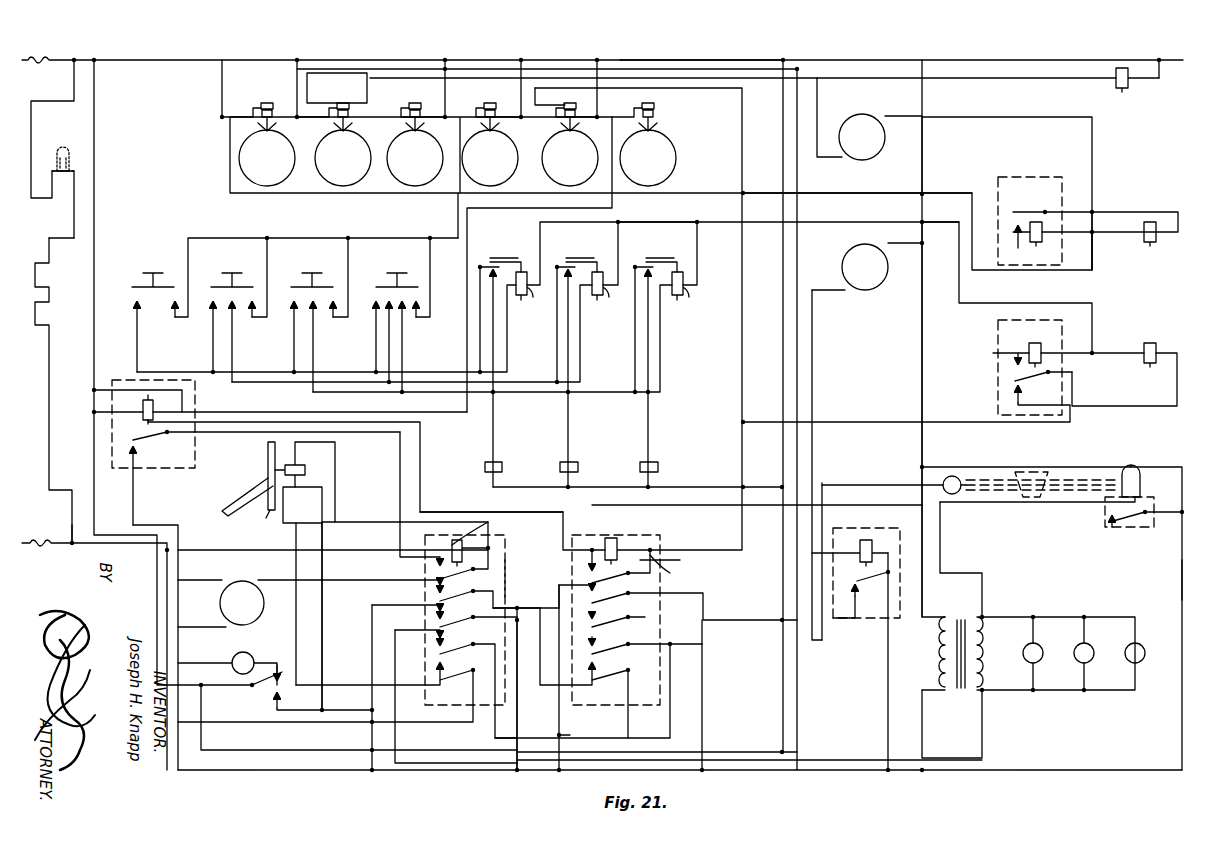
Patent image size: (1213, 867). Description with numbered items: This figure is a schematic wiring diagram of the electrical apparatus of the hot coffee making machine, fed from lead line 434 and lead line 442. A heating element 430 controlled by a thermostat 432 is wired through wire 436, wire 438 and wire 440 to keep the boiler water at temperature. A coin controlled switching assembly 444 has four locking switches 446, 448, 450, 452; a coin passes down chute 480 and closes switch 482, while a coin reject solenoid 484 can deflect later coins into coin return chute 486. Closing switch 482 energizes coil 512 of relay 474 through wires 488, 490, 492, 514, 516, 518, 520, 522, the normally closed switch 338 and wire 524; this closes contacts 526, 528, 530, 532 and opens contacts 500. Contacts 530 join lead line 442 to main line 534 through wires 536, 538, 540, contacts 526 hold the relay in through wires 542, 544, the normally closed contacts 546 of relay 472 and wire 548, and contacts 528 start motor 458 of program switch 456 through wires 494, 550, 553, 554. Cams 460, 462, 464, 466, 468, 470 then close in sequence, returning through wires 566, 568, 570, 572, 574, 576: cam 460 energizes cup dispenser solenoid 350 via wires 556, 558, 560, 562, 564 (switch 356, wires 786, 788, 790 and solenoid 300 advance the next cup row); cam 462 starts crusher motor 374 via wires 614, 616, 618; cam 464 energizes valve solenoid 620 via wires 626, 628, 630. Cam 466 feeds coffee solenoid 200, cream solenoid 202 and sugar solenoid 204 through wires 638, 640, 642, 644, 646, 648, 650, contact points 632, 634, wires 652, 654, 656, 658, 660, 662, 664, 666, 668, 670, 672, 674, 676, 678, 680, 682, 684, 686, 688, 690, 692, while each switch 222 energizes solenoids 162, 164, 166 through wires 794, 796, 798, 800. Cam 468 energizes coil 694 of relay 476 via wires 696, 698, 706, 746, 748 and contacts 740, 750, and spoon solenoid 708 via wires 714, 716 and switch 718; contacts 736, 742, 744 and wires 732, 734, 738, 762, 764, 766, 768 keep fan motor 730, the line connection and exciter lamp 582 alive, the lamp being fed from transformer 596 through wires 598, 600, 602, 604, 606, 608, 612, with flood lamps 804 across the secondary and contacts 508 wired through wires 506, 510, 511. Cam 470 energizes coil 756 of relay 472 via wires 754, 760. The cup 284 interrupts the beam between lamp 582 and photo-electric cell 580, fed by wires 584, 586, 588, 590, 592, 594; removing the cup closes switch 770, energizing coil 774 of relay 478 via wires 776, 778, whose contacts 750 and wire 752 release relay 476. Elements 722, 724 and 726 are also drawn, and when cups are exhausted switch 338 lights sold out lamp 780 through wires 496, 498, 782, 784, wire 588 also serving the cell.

The lead line 434 is at (120, 62).
The wire 566 is at (224, 63).
The wire 568 is at (310, 63).
The wire 570 is at (384, 63).
The wire 572 is at (458, 63).
The wire 574 is at (532, 63).
The wire 576 is at (640, 63).
The wire 628 is at (997, 72).
The solenoid 620 is at (1116, 79).
The wire 626 is at (1160, 82).
The wire 616 is at (819, 95).
The program switch 456 is at (661, 264).
The wire 618 is at (293, 86).
The wire 630 is at (368, 92).
The wire 660 is at (448, 94).
The wire 706 is at (524, 94).
The wire 760 is at (597, 95).
The cam 460 is at (267, 144).
The cam 462 is at (343, 144).
The cam 464 is at (415, 144).
The cam 466 is at (490, 144).
The cam 468 is at (570, 144).
The cam 470 is at (648, 144).
The wire 436 is at (32, 114).
The thermostat 432 is at (76, 152).
The wire 438 is at (74, 234).
The heating element 430 is at (42, 270).
The wire 488 is at (96, 165).
The wire 440 is at (50, 417).
The lead line 442 is at (64, 542).
The wire 490 is at (92, 394).
The wire 754 is at (90, 412).
The coil 756 is at (142, 404).
The relay 472 is at (153, 424).
The wire 492 is at (92, 446).
The normally closed contacts 546 is at (146, 438).
The wire 548 is at (130, 498).
The switch 446 is at (146, 284).
The switch 448 is at (226, 284).
The switch 450 is at (306, 284).
The switch 452 is at (390, 284).
The wire 652 is at (200, 238).
The wire 654 is at (280, 238).
The wire 656 is at (360, 238).
The wire 658 is at (454, 243).
The wire 662 is at (265, 258).
The wire 664 is at (345, 258).
The wire 666 is at (428, 258).
The contact point 632 is at (136, 306).
The contact point 634 is at (173, 302).
The wire 668 is at (213, 336).
The coin controlled switching assembly 444 is at (252, 342).
The wire 670 is at (294, 335).
The wire 690 is at (316, 350).
The wire 672 is at (376, 336).
The wire 682 is at (391, 348).
The wire 692 is at (404, 332).
The wire 650 is at (150, 378).
The wire 648 is at (240, 380).
The wire 646 is at (322, 380).
The wire 644 is at (420, 380).
The wire 680 is at (250, 385).
The wire 678 is at (512, 388).
The wire 688 is at (590, 395).
The coffee solenoid 200 is at (532, 297).
The cream dispensing solenoid 202 is at (608, 297).
The sugar feeding solenoid 204 is at (688, 297).
The switch 222 is at (514, 258).
The wire 642 is at (509, 343).
The wire 676 is at (584, 343).
The wire 686 is at (662, 343).
The wire 800 is at (495, 406).
The solenoid 164 is at (570, 460).
The solenoid 166 is at (650, 460).
The solenoid 162 is at (485, 468).
The wire 640 is at (560, 225).
The wire 674 is at (620, 240).
The wire 684 is at (699, 240).
The wire 638 is at (636, 214).
The wire 798 is at (512, 495).
The wire 796 is at (587, 495).
The wire 794 is at (729, 482).
The wire 696 is at (470, 518).
The wire 748 is at (683, 510).
The chute 480 is at (266, 455).
The coin return chute 486 is at (246, 495).
The coin reject solenoid 484 is at (298, 452).
The wire 506 is at (324, 496).
The wire 518 is at (382, 522).
The wire 544 is at (398, 453).
The switch 482 is at (275, 528).
The wire 514 is at (190, 548).
The wire 494 is at (180, 572).
The motor 458 is at (330, 602).
The wire 550 is at (212, 628).
The wire 538 is at (375, 606).
The wire 520 is at (325, 650).
The wire 496 is at (180, 660).
The wire 782 is at (214, 658).
The sold out lamp 780 is at (258, 655).
The wire 784 is at (288, 675).
The wire 524 is at (230, 688).
The switch 338 is at (267, 687).
The wire 522 is at (280, 708).
The normally closed contacts 500 is at (326, 693).
The wire 511 is at (274, 746).
The wire 498 is at (328, 722).
The wire 604 is at (424, 756).
The wire 540 is at (462, 775).
The main line 534 is at (552, 775).
The relay 474 is at (447, 620).
The wire 516 is at (470, 552).
The coil 512 is at (490, 525).
The contacts 526 is at (452, 575).
The wire 542 is at (495, 562).
The contacts 528 is at (452, 597).
The wire 553 is at (506, 608).
The wire 536 is at (510, 570).
The contacts 530 is at (452, 623).
The wire 762 is at (520, 632).
The contacts 532 is at (452, 650).
The wire 554 is at (542, 695).
The wire 768 is at (558, 726).
The relay 476 is at (616, 619).
The coil 694 is at (612, 535).
The wire 738 is at (548, 590).
The contacts 740 is at (607, 580).
The wire 698 is at (672, 565).
The wire 746 is at (676, 573).
The contacts 742 is at (607, 600).
The contacts 736 is at (607, 624).
The contacts 744 is at (607, 651).
The wire 766 is at (660, 640).
The normally closed contacts 508 is at (611, 703).
The wire 602 is at (577, 743).
The wire 510 is at (630, 752).
The wire 600 is at (710, 645).
The wire 764 is at (705, 712).
The wire 606 is at (812, 766).
The pellet crusher motor 374 is at (862, 137).
The wire 614 is at (907, 120).
The wire 556 is at (924, 98).
The wire 558 is at (992, 125).
The wire 584 is at (924, 148).
The wire 564 is at (834, 201).
The wire 586 is at (924, 232).
The motor 730 is at (850, 267).
The wire 732 is at (902, 244).
The wire 734 is at (814, 358).
The wire 588 is at (918, 330).
The wire 786 is at (1076, 202).
The switch 356 is at (1032, 208).
The wire 560 is at (1117, 200).
The solenoid 300 is at (1042, 236).
The wire 788 is at (1016, 250).
The wire 790 is at (1076, 222).
The wire 562 is at (1105, 232).
The cup dispenser solenoid 350 is at (1158, 236).
The relay 722 is at (1034, 344).
The conductor 726 is at (994, 353).
The conductor 724 is at (1075, 353).
The wire 714 is at (1108, 350).
The solenoid 708 is at (1158, 345).
The switch 718 is at (1030, 380).
The wire 716 is at (1170, 392).
The wire 590 is at (977, 475).
The exciter lamp 582 is at (958, 478).
The cup 284 is at (1040, 470).
The photo-electric cell 580 is at (1126, 466).
The wire 592 is at (1170, 470).
The wire 776 is at (1020, 505).
The wire 778 is at (1156, 505).
The switch 770 is at (1120, 528).
The wire 594 is at (1178, 580).
The wire 598 is at (942, 545).
The coil 774 is at (876, 524).
The normally closed contacts 750 is at (862, 578).
The relay 478 is at (854, 561).
The wire 752 is at (884, 665).
The wire 608 is at (924, 590).
The transformer 596 is at (985, 665).
The wire 612 is at (924, 735).
The flood lamps 804 is at (1040, 645).